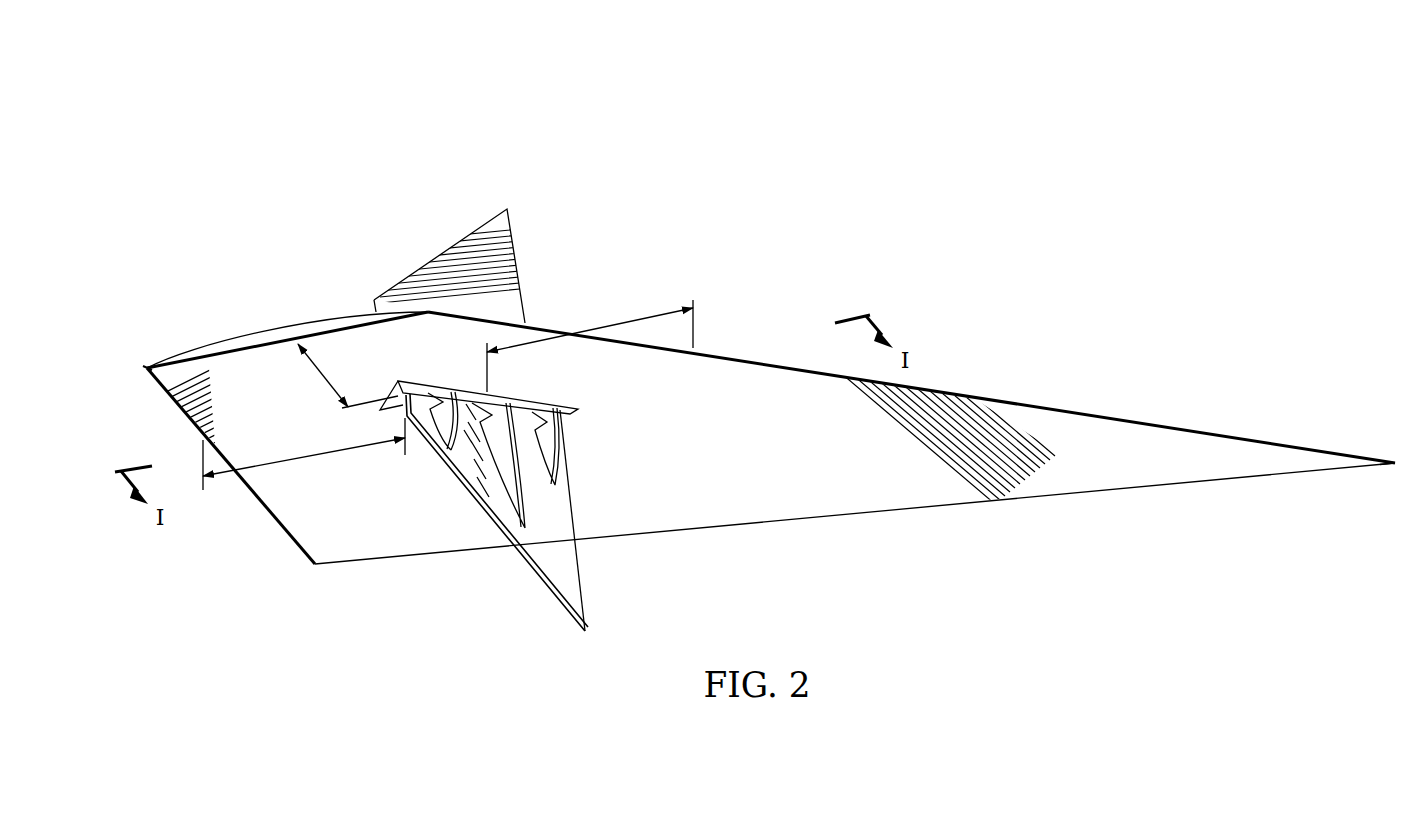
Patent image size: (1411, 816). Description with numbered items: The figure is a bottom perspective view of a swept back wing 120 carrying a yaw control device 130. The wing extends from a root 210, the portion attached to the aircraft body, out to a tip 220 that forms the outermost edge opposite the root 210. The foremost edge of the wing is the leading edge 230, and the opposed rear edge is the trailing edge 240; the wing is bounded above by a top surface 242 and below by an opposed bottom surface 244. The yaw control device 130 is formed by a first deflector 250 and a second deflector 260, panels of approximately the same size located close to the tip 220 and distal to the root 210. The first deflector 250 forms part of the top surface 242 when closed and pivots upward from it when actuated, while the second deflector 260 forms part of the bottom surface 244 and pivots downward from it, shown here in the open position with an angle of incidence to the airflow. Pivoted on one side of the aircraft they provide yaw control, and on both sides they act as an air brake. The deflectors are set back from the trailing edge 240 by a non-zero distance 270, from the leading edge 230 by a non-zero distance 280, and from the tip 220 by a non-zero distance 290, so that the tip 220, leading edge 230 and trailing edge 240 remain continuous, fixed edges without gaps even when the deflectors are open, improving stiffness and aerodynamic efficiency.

The yaw control device 130 is at (475, 328).
The swept back wing 120 is at (742, 418).
The tip 220 is at (140, 363).
The leading edge 230 is at (273, 519).
The trailing edge 240 is at (1033, 402).
The top surface 242 is at (743, 358).
The bottom surface 244 is at (745, 513).
The root 210 is at (888, 515).
The first deflector 250 is at (443, 250).
The second deflector 260 is at (542, 506).
The distance 270 is at (608, 328).
The distance 280 is at (326, 455).
The distance 290 is at (322, 372).